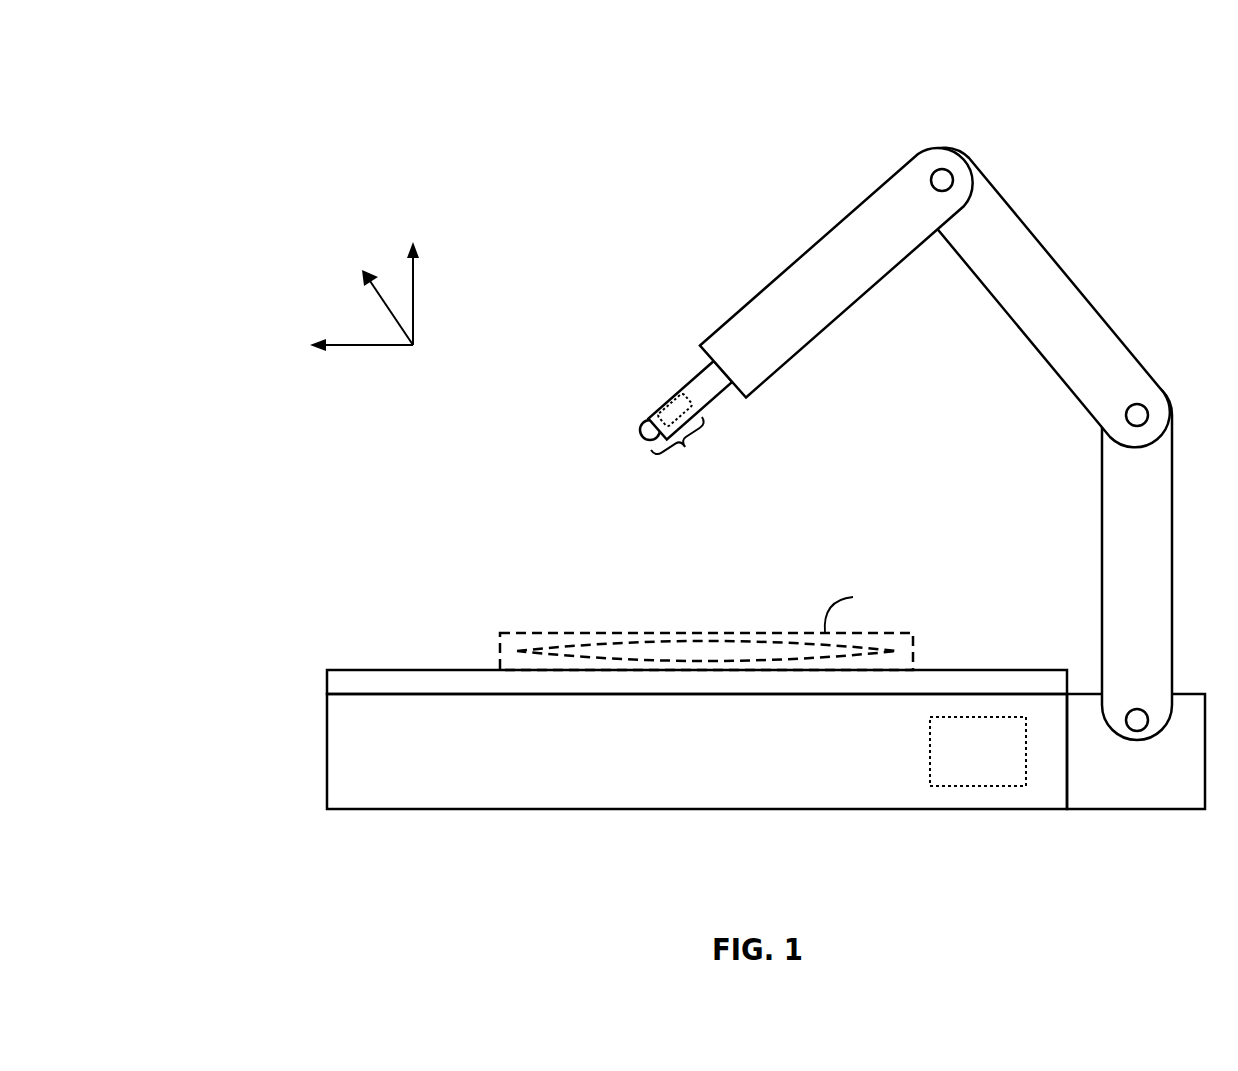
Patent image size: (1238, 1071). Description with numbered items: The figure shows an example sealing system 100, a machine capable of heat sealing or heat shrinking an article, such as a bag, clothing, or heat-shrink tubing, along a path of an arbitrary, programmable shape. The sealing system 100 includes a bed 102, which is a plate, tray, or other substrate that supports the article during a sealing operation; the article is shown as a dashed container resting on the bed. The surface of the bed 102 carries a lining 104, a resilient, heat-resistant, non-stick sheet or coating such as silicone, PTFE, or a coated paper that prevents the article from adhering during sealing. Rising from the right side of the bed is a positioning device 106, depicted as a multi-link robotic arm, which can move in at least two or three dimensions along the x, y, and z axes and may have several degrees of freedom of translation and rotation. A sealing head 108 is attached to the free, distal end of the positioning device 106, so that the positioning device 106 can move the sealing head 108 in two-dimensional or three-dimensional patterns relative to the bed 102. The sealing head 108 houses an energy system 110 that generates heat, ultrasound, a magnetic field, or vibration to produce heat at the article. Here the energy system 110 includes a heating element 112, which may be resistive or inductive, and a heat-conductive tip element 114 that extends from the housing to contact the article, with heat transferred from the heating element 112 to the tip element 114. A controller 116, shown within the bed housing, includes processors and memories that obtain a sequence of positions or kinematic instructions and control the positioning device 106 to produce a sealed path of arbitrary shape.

The sealing system 100 is at (268, 64).
The bed 102 is at (717, 752).
The lining 104 is at (405, 683).
The positioning device 106 is at (1080, 252).
The sealing head 108 is at (654, 381).
The energy system 110 is at (685, 447).
The heating element 112 is at (667, 410).
The tip element 114 is at (650, 428).
The controller 116 is at (996, 764).